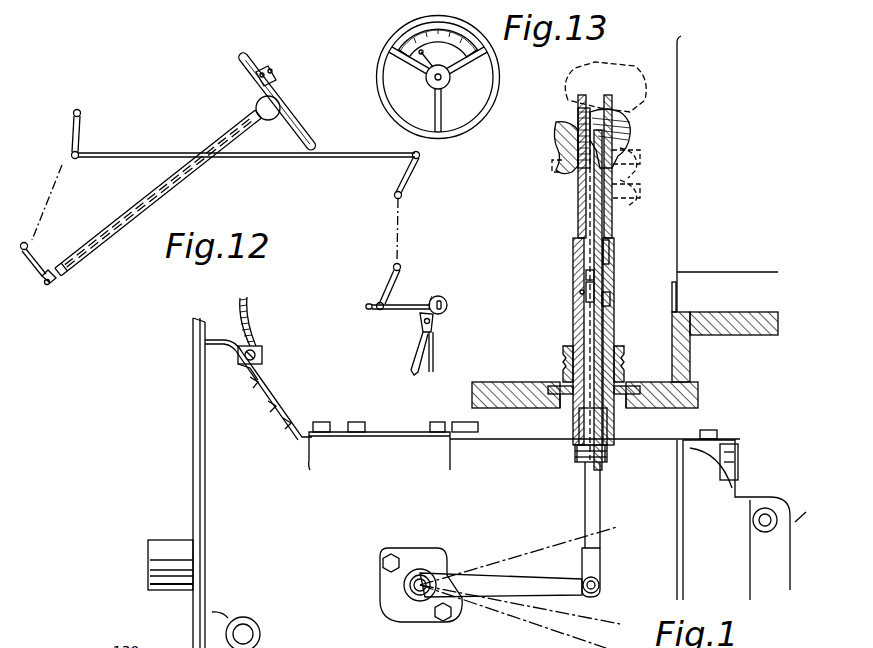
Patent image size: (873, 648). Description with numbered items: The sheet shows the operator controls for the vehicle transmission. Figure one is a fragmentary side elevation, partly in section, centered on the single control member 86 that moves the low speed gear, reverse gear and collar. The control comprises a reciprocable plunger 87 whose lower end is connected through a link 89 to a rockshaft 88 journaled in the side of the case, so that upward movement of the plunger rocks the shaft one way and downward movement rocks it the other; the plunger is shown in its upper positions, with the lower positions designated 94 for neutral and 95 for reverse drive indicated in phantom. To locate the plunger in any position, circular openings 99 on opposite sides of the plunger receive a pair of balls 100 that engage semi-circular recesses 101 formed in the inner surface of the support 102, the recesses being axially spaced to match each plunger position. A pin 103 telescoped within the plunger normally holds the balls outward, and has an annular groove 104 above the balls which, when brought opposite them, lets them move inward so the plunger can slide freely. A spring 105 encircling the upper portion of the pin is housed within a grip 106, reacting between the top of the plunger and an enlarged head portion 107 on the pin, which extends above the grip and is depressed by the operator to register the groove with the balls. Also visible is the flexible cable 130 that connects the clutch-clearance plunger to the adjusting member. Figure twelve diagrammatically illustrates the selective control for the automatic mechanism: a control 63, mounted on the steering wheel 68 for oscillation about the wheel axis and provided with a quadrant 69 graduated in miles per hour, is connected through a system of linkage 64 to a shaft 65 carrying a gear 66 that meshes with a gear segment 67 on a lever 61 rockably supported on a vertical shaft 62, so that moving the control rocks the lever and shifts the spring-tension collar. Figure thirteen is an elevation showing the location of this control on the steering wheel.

In FIG. 12, the lever 61 is at (412, 364).
In FIG. 12, the vertical shaft 62 is at (433, 350).
In FIG. 12, the control 63 is at (276, 83).
In FIG. 13, the control 63 is at (407, 54).
In FIG. 12, the system of linkage 64 is at (395, 194).
In FIG. 12, the shaft 65 is at (406, 306).
In FIG. 12, the gear 66 is at (441, 297).
In FIG. 12, the gear segment 67 is at (434, 318).
In FIG. 12, the steering wheel 68 is at (300, 122).
In FIG. 13, the steering wheel 68 is at (474, 125).
In FIG. 12, the quadrant 69 is at (262, 68).
In FIG. 13, the quadrant 69 is at (469, 46).
In FIG. 1, the control member 86 is at (648, 128).
In FIG. 1, the reciprocable plunger 87 is at (604, 232).
In FIG. 1, the rockshaft 88 is at (425, 580).
In FIG. 1, the link 89 is at (488, 582).
In FIG. 1, the neutral position of plunger 94 is at (640, 158).
In FIG. 1, the reverse position of plunger 95 is at (640, 186).
In FIG. 1, the circular openings 99 is at (604, 288).
In FIG. 1, the balls 100 is at (575, 305).
In FIG. 1, the semi-circular recesses 101 is at (610, 340).
In FIG. 1, the support 102 is at (606, 308).
In FIG. 1, the pin 103 is at (608, 246).
In FIG. 1, the annular groove 104 is at (604, 278).
In FIG. 1, the spring 105 is at (556, 147).
In FIG. 1, the grip 106 is at (618, 128).
In FIG. 1, the enlarged head portion 107 is at (580, 115).
In FIG. 1, the flexible cable 130 is at (257, 324).